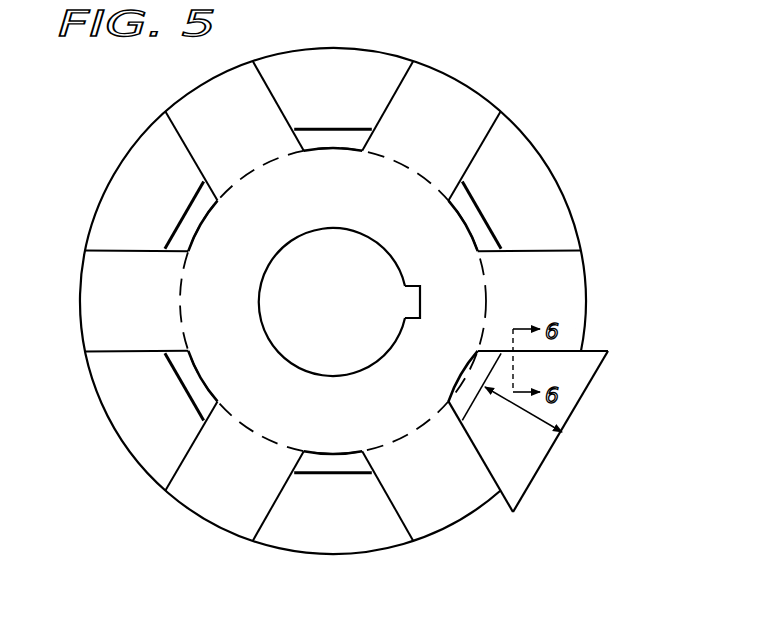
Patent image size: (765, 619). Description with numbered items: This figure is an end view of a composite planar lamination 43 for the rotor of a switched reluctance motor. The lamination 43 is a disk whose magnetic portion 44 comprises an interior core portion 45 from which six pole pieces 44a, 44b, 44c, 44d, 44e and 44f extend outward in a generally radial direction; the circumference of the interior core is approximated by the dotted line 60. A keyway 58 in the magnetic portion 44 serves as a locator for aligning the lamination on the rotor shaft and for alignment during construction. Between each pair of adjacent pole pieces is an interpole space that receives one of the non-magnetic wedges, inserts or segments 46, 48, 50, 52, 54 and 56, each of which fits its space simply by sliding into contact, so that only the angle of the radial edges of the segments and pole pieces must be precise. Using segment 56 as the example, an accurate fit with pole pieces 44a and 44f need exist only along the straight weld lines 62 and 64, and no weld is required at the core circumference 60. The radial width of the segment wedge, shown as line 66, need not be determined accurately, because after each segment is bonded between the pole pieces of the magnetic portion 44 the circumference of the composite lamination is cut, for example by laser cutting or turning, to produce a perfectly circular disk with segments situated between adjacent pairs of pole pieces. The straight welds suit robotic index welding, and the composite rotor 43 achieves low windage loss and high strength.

The composite lamination 43 is at (552, 118).
The magnetic portion 44 is at (533, 295).
The pole piece 44a is at (585, 331).
The pole piece 44b is at (490, 103).
The pole piece 44c is at (214, 78).
The pole piece 44d is at (44, 301).
The pole piece 44e is at (201, 517).
The pole piece 44f is at (457, 522).
The interior core portion 45 is at (447, 258).
The non-magnetic segment 46 is at (560, 188).
The non-magnetic segment 48 is at (396, 57).
The non-magnetic segment 50 is at (127, 155).
The non-magnetic segment 52 is at (106, 412).
The non-magnetic segment 54 is at (318, 554).
The non-magnetic segment 56 is at (550, 451).
The keyway 58 is at (412, 321).
The dotted line 60 is at (410, 437).
The weld line 62 is at (481, 456).
The weld line 64 is at (548, 354).
The radial width line 66 is at (532, 416).